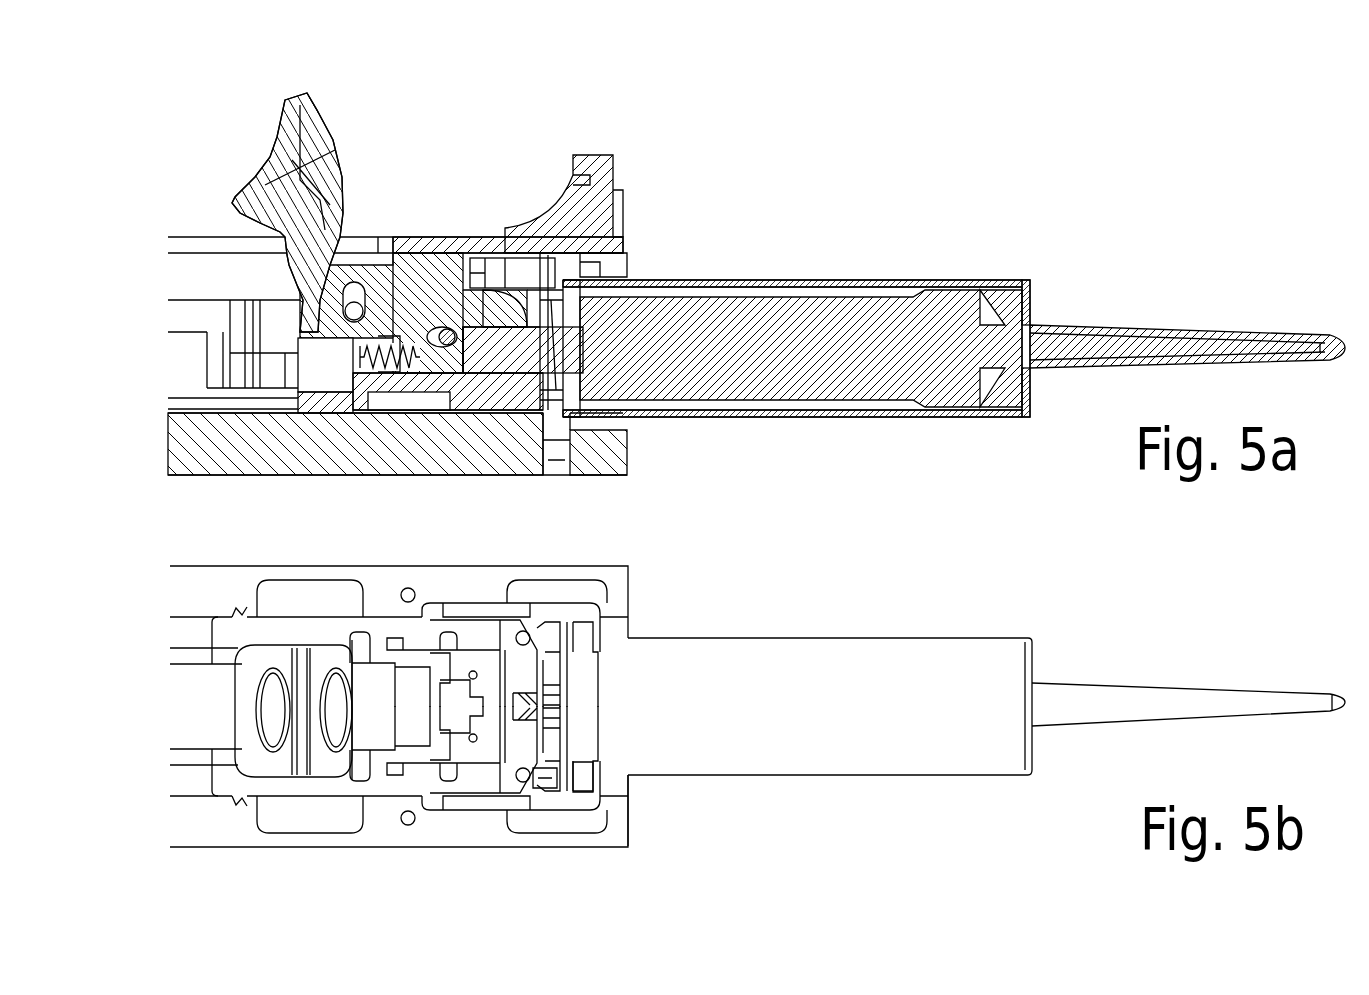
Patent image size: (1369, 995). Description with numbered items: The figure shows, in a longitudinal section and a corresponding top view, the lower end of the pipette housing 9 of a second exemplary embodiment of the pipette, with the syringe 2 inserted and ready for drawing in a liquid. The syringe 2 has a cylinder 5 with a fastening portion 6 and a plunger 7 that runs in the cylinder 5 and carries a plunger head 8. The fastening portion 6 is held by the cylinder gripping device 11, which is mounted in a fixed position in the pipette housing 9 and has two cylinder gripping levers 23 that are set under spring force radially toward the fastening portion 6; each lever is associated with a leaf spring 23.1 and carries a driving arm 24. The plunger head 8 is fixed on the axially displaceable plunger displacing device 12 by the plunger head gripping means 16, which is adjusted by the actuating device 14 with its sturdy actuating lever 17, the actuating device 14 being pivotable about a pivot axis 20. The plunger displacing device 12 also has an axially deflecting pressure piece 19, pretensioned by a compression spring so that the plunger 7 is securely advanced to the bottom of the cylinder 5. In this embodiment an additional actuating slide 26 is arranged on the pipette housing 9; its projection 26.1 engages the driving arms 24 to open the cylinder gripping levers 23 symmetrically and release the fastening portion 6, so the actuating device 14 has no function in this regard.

In FIG. 5A, the syringe 2 is at (900, 243).
In FIG. 5B, the syringe 2 is at (882, 775).
In FIG. 5A, the cylinder 5 is at (880, 420).
In FIG. 5A, the fastening portion 6 is at (572, 440).
In FIG. 5B, the fastening portion 6 is at (584, 762).
In FIG. 5A, the plunger 7 is at (797, 410).
In FIG. 5A, the plunger head 8 is at (470, 385).
In FIG. 5A, the pipette housing 9 is at (413, 240).
In FIG. 5B, the cylinder gripping device 11 is at (555, 800).
In FIG. 5A, the plunger displacing device 12 is at (360, 410).
In FIG. 5A, the actuating device 14 is at (220, 147).
In FIG. 5B, the actuating device 14 is at (270, 735).
In FIG. 5A, the plunger head gripping means 16 is at (492, 285).
In FIG. 5A, the actuating lever 17 is at (278, 160).
In FIG. 5A, the pressure piece 19 is at (416, 372).
In FIG. 5A, the pivot axis 20 is at (354, 308).
In FIG. 5A, the cylinder gripping lever 23 is at (598, 605).
In FIG. 5B, the leaf spring 23.1 is at (307, 798).
In FIG. 5A, the driving arm 24 is at (545, 610).
In FIG. 5A, the actuating slide 26 is at (600, 190).
In FIG. 5A, the projection 26.1 is at (530, 600).